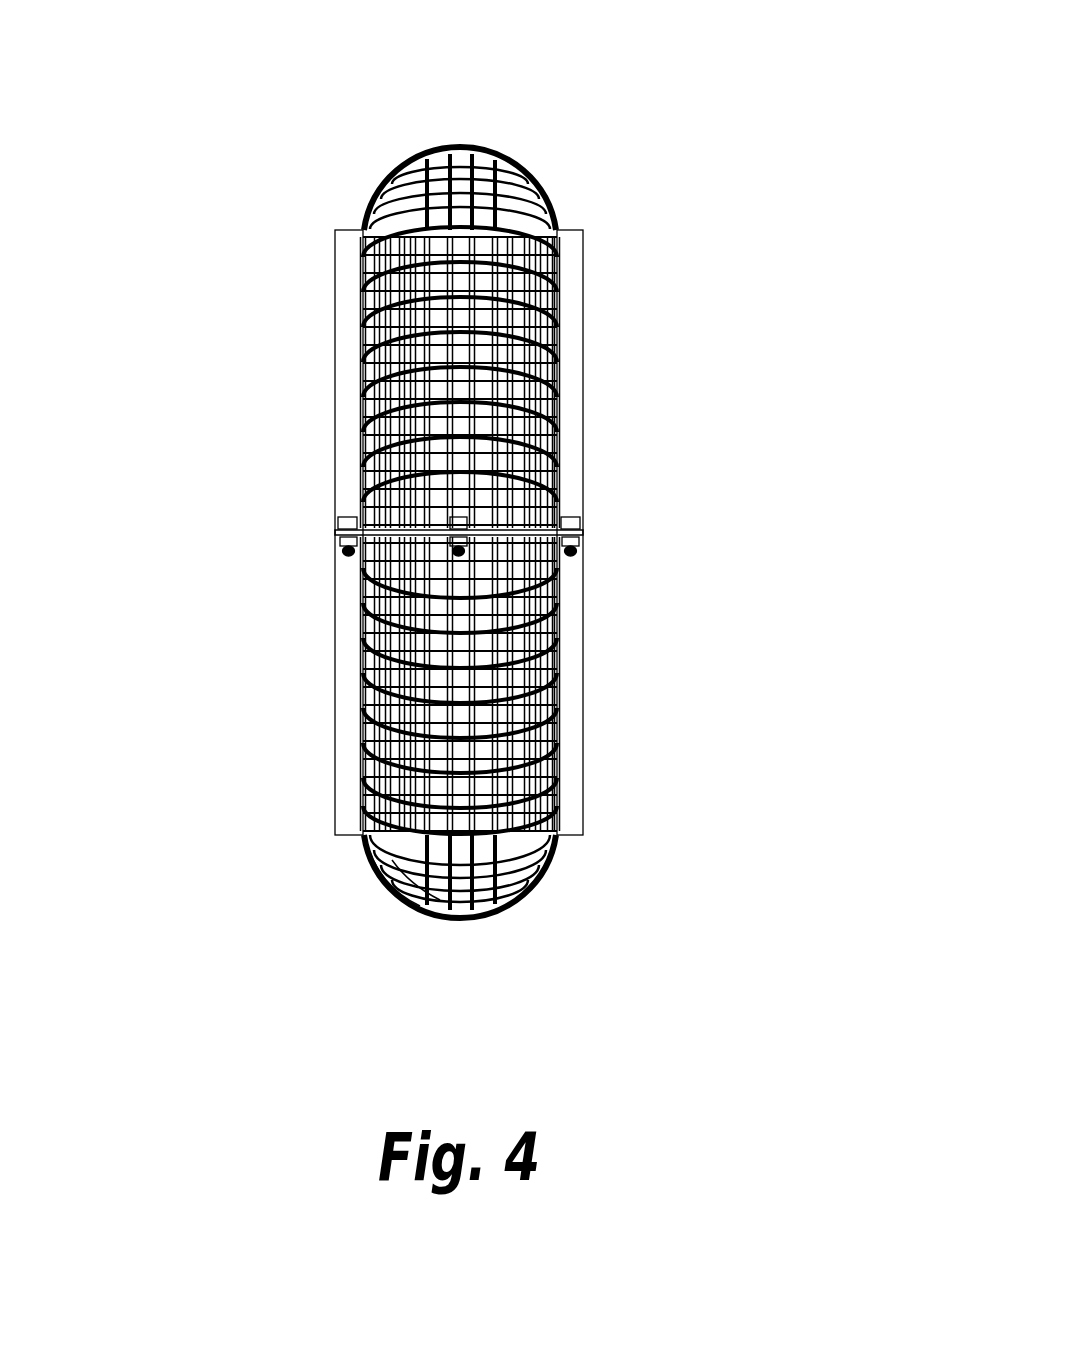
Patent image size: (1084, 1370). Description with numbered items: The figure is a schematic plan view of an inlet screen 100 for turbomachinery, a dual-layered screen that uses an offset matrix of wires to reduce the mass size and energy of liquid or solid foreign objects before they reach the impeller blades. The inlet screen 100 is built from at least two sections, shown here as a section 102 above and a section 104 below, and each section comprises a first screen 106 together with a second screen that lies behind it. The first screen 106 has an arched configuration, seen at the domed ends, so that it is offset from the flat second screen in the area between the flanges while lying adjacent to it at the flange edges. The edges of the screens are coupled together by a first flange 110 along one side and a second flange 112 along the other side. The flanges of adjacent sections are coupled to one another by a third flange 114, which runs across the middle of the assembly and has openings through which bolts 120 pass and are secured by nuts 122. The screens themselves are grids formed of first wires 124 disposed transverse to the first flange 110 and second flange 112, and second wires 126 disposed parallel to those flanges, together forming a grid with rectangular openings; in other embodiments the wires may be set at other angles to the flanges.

The inlet screen 100 is at (730, 58).
The section 102 is at (594, 362).
The section 104 is at (596, 686).
The first screen 106 is at (480, 148).
The first flange 110 is at (347, 443).
The second flange 112 is at (575, 437).
The third flange 114 is at (370, 511).
The bolt 120 is at (583, 517).
The nut 122 is at (583, 545).
The first wire 124 is at (378, 857).
The second wire 126 is at (403, 885).